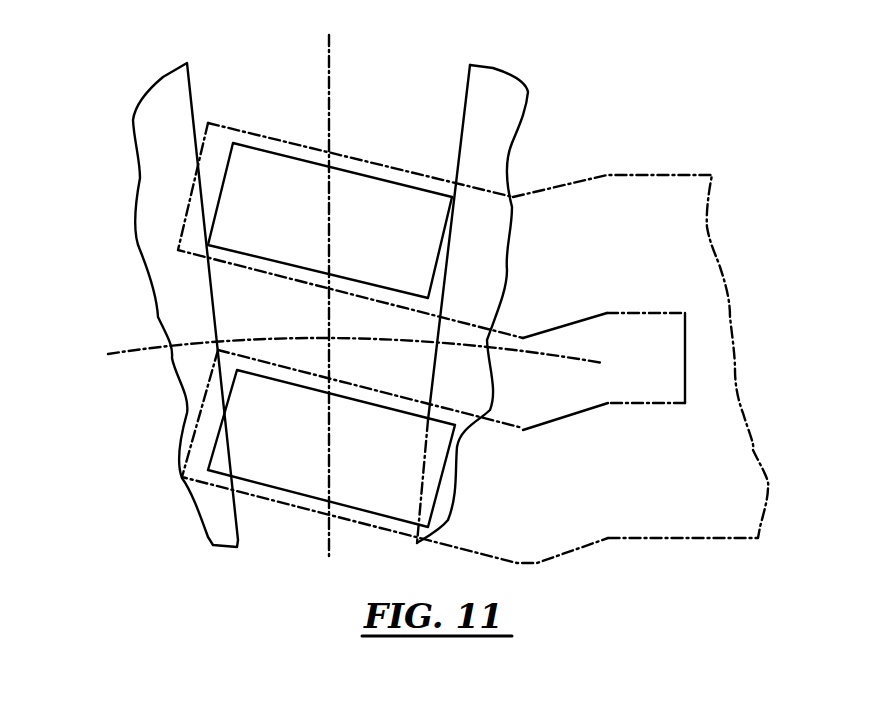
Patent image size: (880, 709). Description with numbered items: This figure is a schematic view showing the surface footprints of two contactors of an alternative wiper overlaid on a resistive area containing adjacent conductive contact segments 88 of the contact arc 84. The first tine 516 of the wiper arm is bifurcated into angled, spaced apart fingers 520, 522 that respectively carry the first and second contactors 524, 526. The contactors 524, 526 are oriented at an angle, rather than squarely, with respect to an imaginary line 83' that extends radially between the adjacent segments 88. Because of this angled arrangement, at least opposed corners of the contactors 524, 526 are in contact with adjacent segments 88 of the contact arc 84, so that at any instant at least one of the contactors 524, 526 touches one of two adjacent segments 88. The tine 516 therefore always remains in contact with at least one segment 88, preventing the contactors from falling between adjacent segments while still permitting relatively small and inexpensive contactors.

The imaginary line 83' is at (362, 297).
The conductive contact segments 88 is at (170, 120).
The finger 520 is at (202, 177).
The finger 522 is at (200, 407).
The first contactor 524 is at (330, 220).
The second contactor 526 is at (331, 448).
The contact arc 84 is at (595, 362).
The first tine 516 is at (683, 250).